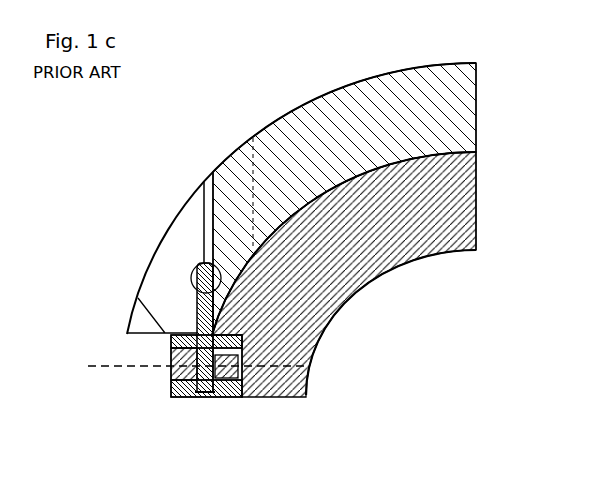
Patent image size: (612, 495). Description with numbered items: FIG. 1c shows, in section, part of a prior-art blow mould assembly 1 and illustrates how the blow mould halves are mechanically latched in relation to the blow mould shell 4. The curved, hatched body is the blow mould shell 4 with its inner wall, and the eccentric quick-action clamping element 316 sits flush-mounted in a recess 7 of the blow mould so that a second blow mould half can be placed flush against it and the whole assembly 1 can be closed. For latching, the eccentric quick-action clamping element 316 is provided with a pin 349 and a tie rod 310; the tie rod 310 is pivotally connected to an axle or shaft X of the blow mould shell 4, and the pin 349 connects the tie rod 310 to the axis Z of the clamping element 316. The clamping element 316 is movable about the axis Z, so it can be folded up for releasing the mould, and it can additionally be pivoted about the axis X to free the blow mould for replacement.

The blow mould assembly 1 is at (287, 102).
The blow mould shell 4 is at (318, 160).
The recess 7 is at (321, 338).
The tie rod 310 is at (197, 317).
The eccentric quick-action clamping element 316 is at (224, 397).
The pin 349 is at (178, 397).
The axle or shaft X is at (196, 280).
The axis Z is at (189, 364).